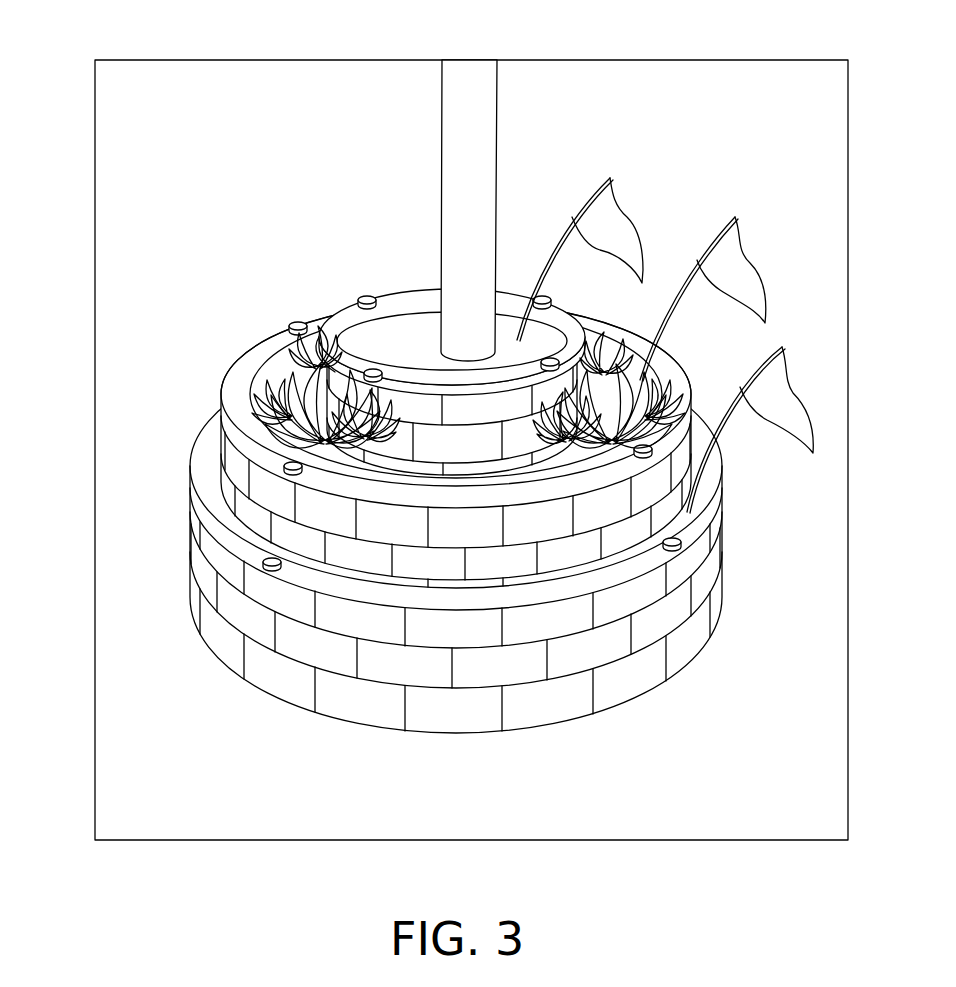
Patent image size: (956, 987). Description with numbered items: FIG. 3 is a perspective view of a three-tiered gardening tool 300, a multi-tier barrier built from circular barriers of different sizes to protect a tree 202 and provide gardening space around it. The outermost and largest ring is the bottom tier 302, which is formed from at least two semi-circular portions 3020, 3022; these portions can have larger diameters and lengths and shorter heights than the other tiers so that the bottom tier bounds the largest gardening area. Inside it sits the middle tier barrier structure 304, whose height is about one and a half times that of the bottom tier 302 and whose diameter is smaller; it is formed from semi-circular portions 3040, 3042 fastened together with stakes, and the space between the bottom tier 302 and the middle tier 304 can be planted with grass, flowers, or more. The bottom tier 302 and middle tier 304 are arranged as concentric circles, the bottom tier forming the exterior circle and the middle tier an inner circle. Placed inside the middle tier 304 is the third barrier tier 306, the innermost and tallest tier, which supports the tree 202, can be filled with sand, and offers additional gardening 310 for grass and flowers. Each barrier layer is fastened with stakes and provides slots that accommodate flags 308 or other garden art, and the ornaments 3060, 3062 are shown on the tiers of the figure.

The three-tiered gardening tool 300 is at (168, 226).
The tree 202 is at (468, 131).
The bottom tier 302 is at (468, 538).
The semi-circular portion 3020 is at (688, 634).
The semi-circular portion 3022 is at (232, 611).
The middle tier barrier structure 304 is at (472, 444).
The semi-circular portion 3040 is at (690, 403).
The semi-circular portion 3042 is at (232, 452).
The third barrier tier 306 is at (575, 372).
The right flame ornament 3060 is at (640, 333).
The left flame ornament 3062 is at (305, 370).
The flags 308 is at (745, 405).
The additional gardening 310 is at (333, 362).